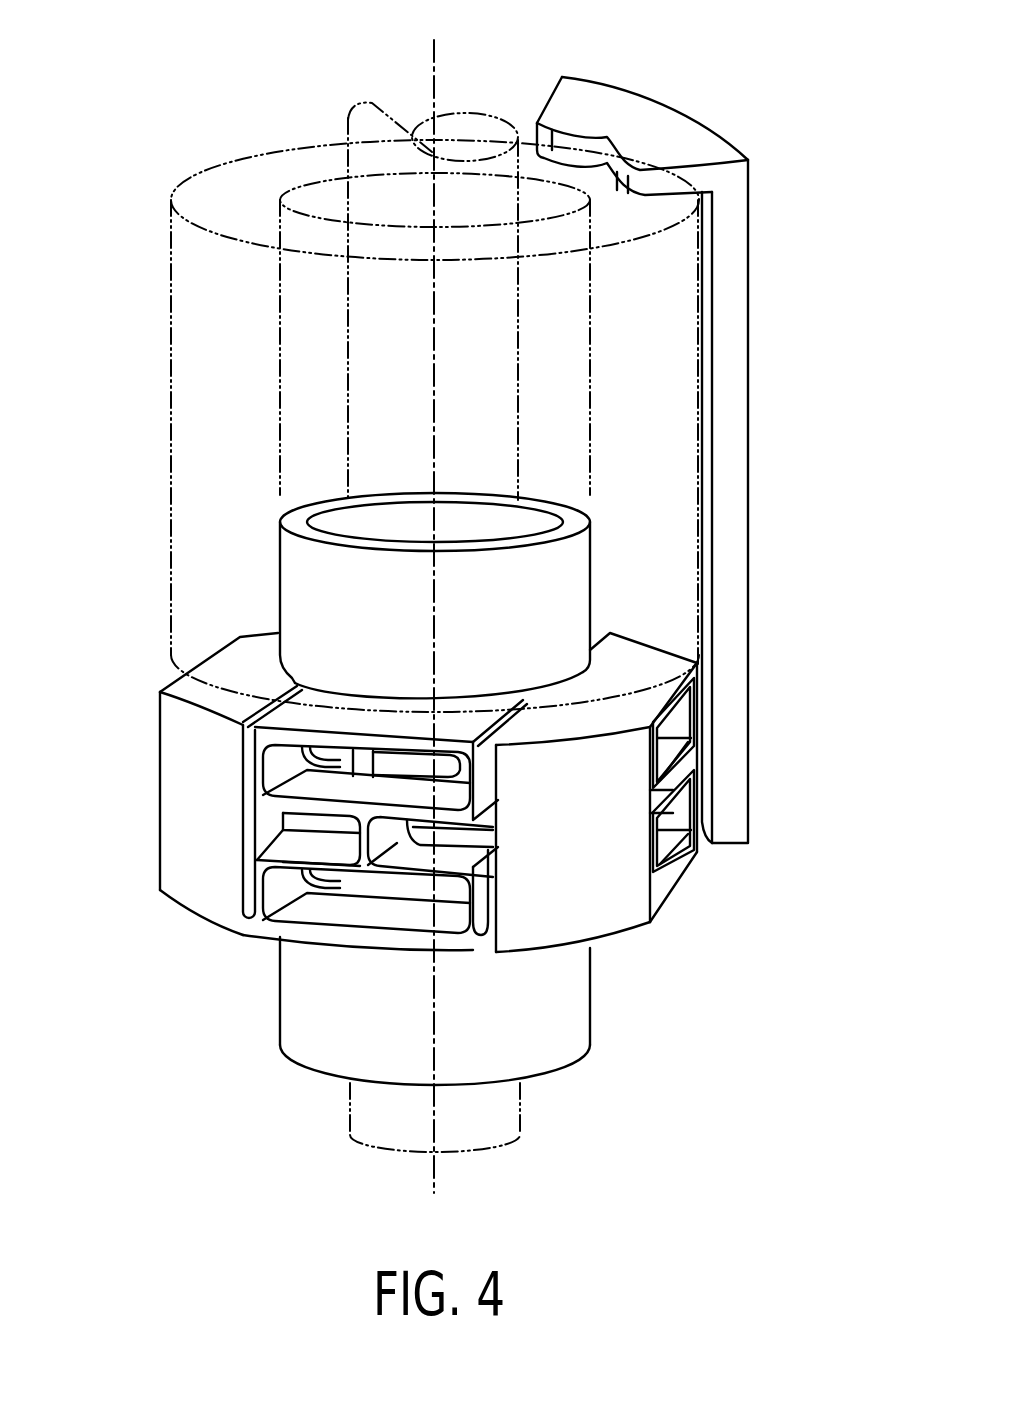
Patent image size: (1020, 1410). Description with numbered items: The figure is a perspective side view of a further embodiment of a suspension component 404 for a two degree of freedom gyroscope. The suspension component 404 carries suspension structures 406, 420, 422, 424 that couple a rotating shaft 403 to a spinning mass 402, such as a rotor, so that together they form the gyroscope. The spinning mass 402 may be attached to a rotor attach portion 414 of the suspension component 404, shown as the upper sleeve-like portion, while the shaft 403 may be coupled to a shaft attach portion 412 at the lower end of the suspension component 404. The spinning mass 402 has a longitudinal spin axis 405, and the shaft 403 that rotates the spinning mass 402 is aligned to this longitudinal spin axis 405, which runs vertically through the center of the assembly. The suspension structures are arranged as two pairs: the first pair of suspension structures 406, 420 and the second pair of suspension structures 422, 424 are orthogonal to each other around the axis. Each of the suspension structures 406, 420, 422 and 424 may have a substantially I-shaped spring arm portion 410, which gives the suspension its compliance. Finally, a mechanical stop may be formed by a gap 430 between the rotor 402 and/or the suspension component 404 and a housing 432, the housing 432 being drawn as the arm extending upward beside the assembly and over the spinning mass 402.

The spinning mass 402 is at (204, 263).
The rotating shaft 403 is at (348, 147).
The suspension component 404 is at (712, 902).
The longitudinal spin axis 405 is at (440, 80).
The suspension structure 406 is at (374, 908).
The I-shaped spring arm portion 410 is at (386, 838).
The shaft attach portion 412 is at (303, 1015).
The rotor attach portion 414 is at (297, 597).
The suspension structure 420 is at (603, 613).
The suspension structure 422 is at (680, 728).
The suspension structure 424 is at (130, 740).
The gap 430 is at (712, 858).
The housing 432 is at (752, 373).